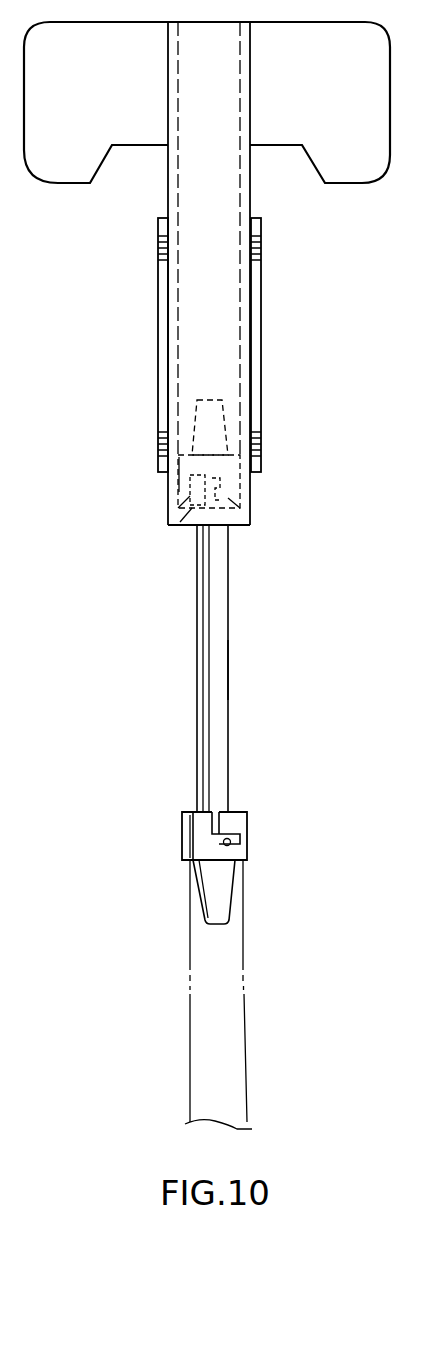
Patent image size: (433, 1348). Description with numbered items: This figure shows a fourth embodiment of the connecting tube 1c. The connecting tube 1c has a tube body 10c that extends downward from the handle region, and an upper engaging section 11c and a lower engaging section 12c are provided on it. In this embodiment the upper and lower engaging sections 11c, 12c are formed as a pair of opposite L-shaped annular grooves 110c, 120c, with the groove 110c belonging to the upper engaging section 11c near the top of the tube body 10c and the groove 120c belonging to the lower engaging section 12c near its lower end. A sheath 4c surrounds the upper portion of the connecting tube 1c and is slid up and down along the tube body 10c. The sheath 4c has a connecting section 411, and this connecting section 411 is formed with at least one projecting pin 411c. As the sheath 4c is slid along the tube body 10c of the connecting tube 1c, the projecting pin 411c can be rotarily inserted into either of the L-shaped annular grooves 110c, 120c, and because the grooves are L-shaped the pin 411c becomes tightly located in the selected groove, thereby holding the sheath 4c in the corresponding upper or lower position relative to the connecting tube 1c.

The sheath 4c is at (158, 301).
The connecting section 411 is at (176, 490).
The projecting pin 411c is at (180, 526).
The upper engaging section 11c is at (231, 467).
The L-shaped annular groove 110c is at (228, 505).
The connecting tube 1c is at (234, 665).
The tube body 10c is at (231, 710).
The lower engaging section 12c is at (240, 820).
The L-shaped annular groove 120c is at (230, 845).